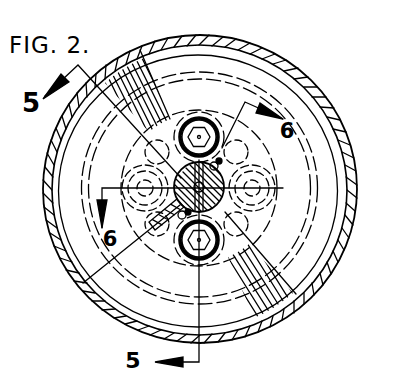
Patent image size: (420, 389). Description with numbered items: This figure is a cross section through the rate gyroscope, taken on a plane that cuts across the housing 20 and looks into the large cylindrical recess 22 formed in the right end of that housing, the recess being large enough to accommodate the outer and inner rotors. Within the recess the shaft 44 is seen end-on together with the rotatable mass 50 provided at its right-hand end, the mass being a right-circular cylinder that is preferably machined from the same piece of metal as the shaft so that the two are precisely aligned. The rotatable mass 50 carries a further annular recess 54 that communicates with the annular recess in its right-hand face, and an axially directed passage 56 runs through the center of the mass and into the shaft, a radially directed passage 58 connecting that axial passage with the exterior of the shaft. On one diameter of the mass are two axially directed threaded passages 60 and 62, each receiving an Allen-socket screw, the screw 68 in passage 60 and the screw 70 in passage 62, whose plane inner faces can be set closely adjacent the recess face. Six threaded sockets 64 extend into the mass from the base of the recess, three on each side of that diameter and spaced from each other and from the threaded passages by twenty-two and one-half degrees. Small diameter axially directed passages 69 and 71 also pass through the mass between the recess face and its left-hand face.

The housing 20 is at (309, 293).
The cylindrical recess 22 is at (99, 282).
The shaft 44 is at (266, 190).
The rotatable mass 50 is at (334, 212).
The further annular recess 54 is at (348, 175).
The axially directed passage 56 is at (83, 283).
The radially directed passage 58 is at (188, 171).
The threaded passage 60 is at (213, 126).
The threaded passage 62 is at (228, 253).
The threaded sockets 64 is at (131, 150).
The screw 68 is at (199, 117).
The axially directed passage 69 is at (221, 165).
The screw 70 is at (212, 252).
The axially directed passage 71 is at (149, 240).